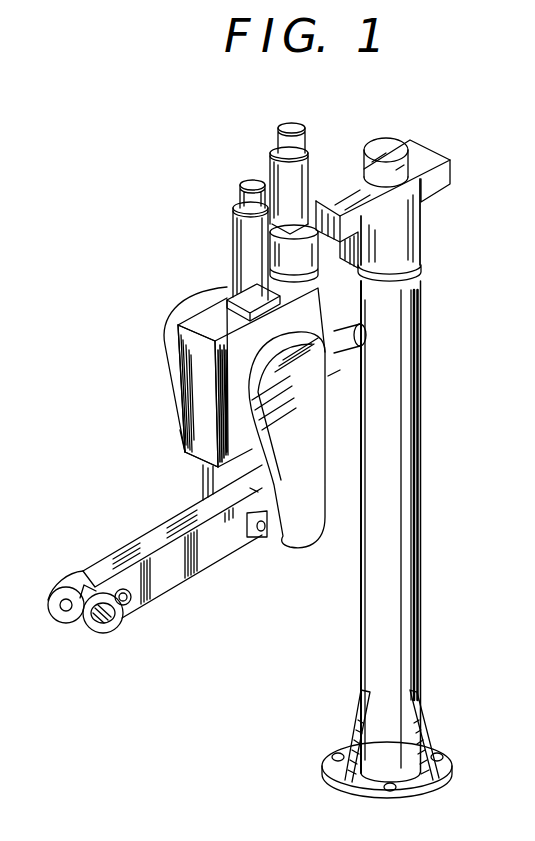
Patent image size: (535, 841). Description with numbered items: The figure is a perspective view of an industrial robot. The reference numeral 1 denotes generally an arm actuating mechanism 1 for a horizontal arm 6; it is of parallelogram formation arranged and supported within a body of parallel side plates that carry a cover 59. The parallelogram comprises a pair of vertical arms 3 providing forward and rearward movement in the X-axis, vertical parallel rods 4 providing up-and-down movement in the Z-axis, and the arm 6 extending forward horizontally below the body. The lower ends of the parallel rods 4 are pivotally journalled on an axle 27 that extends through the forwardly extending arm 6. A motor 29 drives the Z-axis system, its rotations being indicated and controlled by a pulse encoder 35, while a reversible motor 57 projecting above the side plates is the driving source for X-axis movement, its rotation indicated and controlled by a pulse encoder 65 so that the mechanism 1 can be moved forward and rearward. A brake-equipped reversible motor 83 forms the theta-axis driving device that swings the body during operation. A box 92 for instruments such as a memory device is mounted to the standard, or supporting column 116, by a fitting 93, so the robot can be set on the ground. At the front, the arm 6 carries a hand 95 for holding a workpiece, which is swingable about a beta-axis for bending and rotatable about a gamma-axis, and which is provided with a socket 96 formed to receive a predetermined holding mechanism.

The arm actuating mechanism 1 is at (180, 455).
The vertical arms 3 is at (221, 433).
The vertical parallel rods 4 is at (208, 480).
The arm 6 is at (142, 579).
The axle 27 is at (267, 533).
The motor 29 is at (331, 378).
The pulse encoder 35 is at (357, 358).
The reversible motor 57 is at (233, 237).
The cover 59 is at (193, 390).
The pulse encoder 65 is at (238, 199).
The reversible motor 83 is at (308, 146).
The box 92 is at (330, 213).
The fitting 93 is at (343, 268).
The hand 95 is at (73, 635).
The socket 96 is at (66, 623).
The supporting column 116 is at (456, 466).